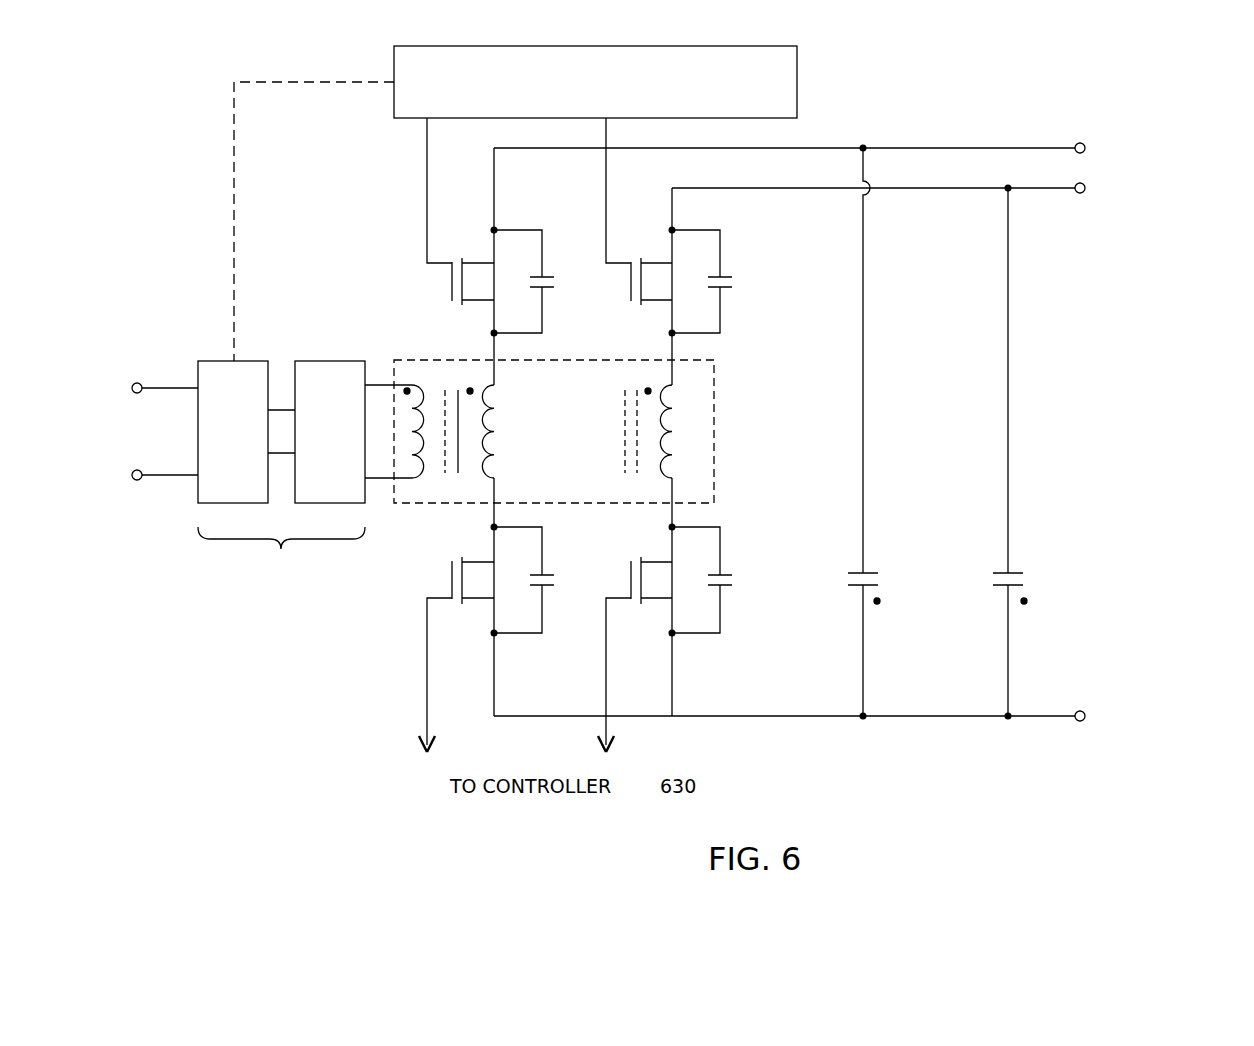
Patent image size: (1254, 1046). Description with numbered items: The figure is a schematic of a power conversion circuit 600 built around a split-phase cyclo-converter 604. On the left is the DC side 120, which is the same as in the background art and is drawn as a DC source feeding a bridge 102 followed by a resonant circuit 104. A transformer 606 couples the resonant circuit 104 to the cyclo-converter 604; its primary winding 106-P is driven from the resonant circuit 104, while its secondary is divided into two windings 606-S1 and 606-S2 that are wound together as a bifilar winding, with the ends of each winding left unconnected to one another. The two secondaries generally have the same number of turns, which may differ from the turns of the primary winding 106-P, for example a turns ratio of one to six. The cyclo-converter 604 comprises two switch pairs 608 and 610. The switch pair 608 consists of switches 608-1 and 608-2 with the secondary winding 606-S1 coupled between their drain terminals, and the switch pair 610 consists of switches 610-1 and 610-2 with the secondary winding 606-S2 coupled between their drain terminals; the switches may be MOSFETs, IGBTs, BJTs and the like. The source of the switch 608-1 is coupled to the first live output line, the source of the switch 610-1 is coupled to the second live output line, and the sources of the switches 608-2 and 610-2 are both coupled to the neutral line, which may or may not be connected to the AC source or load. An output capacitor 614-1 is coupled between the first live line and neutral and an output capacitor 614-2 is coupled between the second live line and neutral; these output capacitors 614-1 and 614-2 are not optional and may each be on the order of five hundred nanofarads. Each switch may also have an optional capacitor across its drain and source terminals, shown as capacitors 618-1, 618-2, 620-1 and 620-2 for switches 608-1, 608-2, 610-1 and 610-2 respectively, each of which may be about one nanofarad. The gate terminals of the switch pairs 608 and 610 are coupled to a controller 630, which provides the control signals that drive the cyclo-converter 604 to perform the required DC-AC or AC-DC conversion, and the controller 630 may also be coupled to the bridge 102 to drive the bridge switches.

The power conversion circuit 600 is at (1211, 72).
The controller 630 is at (697, 95).
The bridge 102 is at (249, 437).
The resonant circuit 104 is at (346, 437).
The DC side 120 is at (281, 555).
The transformer 606 is at (714, 393).
The primary winding 106-P is at (410, 480).
The secondary winding 606-S1 is at (494, 438).
The secondary winding 606-S2 is at (672, 438).
The switch pair 608 is at (452, 190).
The switch 608-1 is at (455, 254).
The switch 608-2 is at (455, 605).
The switch pair 610 is at (638, 192).
The switch 610-1 is at (634, 254).
The switch 610-2 is at (634, 605).
The capacitor 618-1 is at (542, 322).
The capacitor 618-2 is at (542, 540).
The capacitor 620-1 is at (720, 322).
The capacitor 620-2 is at (720, 540).
The split-phase cyclo-converter 604 is at (871, 121).
The output capacitor 614-1 is at (865, 553).
The output capacitor 614-2 is at (1010, 553).